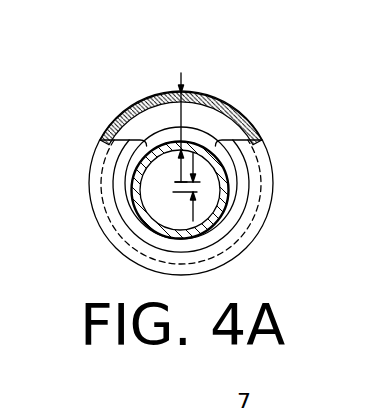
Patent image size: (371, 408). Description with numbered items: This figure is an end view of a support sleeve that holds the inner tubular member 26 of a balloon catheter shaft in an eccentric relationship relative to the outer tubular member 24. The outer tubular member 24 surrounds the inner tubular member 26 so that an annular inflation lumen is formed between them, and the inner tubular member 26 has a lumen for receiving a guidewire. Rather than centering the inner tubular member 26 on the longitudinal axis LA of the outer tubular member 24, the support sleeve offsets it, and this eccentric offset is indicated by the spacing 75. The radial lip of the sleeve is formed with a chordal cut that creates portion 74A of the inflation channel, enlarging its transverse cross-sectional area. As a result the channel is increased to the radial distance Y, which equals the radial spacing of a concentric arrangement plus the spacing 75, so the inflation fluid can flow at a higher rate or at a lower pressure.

The outer tubular member 24 is at (132, 105).
The inner tubular member 26 is at (153, 136).
The portion of channel formed by chordal cut 74A is at (245, 131).
The spacing 75 is at (201, 227).
The radial distance Y is at (181, 120).
The longitudinal axis LA is at (175, 181).